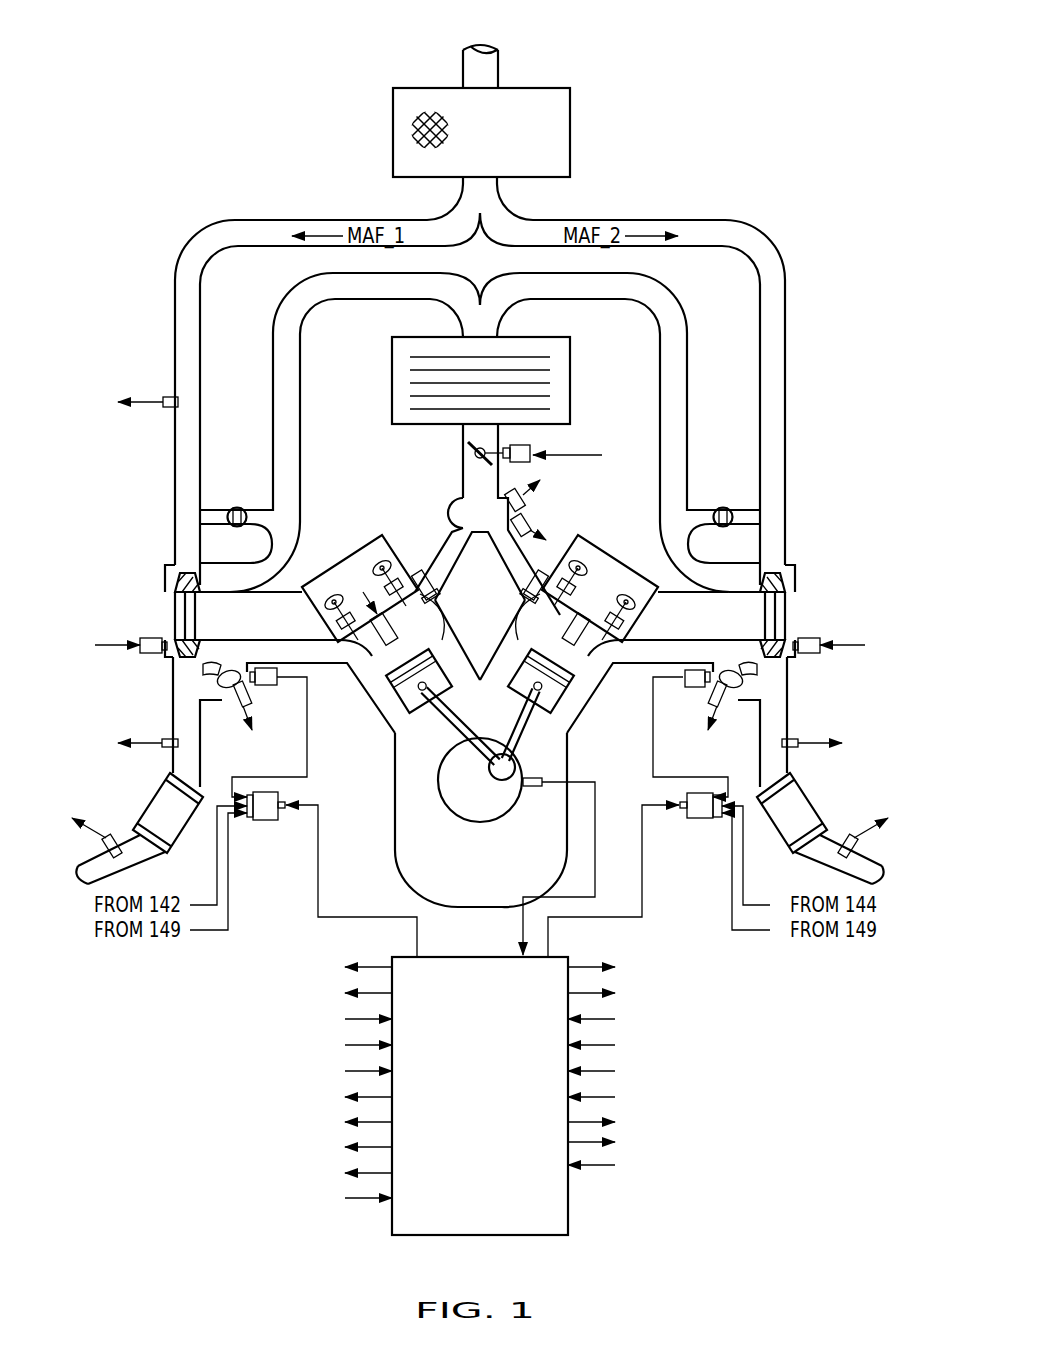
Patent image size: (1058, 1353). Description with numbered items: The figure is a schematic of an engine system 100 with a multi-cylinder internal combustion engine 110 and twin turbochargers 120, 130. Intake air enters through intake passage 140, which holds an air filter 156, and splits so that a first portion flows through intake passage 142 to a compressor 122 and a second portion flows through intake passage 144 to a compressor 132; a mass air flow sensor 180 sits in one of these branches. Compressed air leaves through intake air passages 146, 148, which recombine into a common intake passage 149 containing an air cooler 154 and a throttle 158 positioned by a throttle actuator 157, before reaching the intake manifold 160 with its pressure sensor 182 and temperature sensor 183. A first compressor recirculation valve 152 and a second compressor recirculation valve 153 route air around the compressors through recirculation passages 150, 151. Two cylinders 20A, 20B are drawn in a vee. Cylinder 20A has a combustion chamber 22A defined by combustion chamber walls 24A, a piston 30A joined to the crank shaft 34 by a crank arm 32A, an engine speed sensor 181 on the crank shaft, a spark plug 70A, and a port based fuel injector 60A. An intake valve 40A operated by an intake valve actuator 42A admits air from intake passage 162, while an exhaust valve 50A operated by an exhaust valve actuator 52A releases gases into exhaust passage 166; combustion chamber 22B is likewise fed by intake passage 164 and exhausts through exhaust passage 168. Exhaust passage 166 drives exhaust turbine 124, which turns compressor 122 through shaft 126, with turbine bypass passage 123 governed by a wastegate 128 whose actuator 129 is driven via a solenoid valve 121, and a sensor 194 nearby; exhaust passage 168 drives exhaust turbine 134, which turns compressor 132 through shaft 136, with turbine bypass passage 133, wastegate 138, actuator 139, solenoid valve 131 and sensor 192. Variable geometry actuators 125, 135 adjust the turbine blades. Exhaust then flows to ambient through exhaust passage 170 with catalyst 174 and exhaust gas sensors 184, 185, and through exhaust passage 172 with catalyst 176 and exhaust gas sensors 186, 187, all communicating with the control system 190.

The engine system 100 is at (767, 27).
The internal combustion engine 110 is at (405, 870).
The turbocharger 120 is at (108, 606).
The solenoid valve 121 is at (267, 822).
The compressor 122 is at (178, 582).
The turbine bypass passage 123 is at (207, 688).
The exhaust turbine 124 is at (168, 651).
The actuator 125 is at (150, 637).
The shaft 126 is at (189, 622).
The wastegate 128 is at (245, 690).
The actuator 129 is at (270, 686).
The turbocharger 130 is at (852, 606).
The solenoid valve 131 is at (705, 822).
The compressor 132 is at (790, 582).
The turbine bypass passage 133 is at (742, 688).
The exhaust turbine 134 is at (792, 651).
The actuator 135 is at (810, 637).
The shaft 136 is at (771, 622).
The wastegate 138 is at (712, 690).
The actuator 139 is at (686, 687).
The intake passage 140 is at (487, 72).
The intake passage 142 is at (262, 230).
The intake passage 144 is at (698, 230).
The intake air passage 146 is at (288, 388).
The intake air passage 148 is at (680, 388).
The common intake passage 149 is at (468, 478).
The recirculation passage 150 is at (250, 526).
The recirculation passage 151 is at (727, 526).
The first compressor recirculation valve 152 is at (239, 505).
The second compressor recirculation valve 153 is at (717, 505).
The air cooler 154 is at (565, 391).
The air filter 156 is at (555, 137).
The throttle actuator 157 is at (530, 452).
The throttle 158 is at (468, 448).
The intake manifold 160 is at (448, 510).
The intake passage 162 is at (443, 567).
The intake passage 164 is at (513, 553).
The exhaust passage 166 is at (293, 643).
The exhaust passage 168 is at (668, 643).
The exhaust passage 170 is at (198, 766).
The exhaust passage 172 is at (768, 765).
The catalyst 174 is at (163, 806).
The catalyst 176 is at (798, 806).
The mass air flow sensor 180 is at (172, 395).
The engine speed sensor 181 is at (532, 788).
The intake manifold pressure sensor 182 is at (528, 508).
The intake manifold temperature sensor 183 is at (535, 530).
The exhaust gas sensor 184 is at (170, 738).
The exhaust gas sensor 185 is at (105, 845).
The exhaust gas sensor 186 is at (790, 738).
The exhaust gas sensor 187 is at (857, 847).
The control system 190 is at (466, 1109).
The sensor 192 is at (698, 734).
The sensor 194 is at (250, 729).
The cylinder 20A is at (412, 742).
The cylinder 20B is at (563, 714).
The combustion chamber 22A is at (397, 700).
The combustion chamber 22B is at (578, 680).
The combustion chamber walls 24A is at (395, 720).
The piston 30A is at (400, 740).
The crank arm 32A is at (452, 727).
The crank shaft 34 is at (478, 795).
The intake valve 40A is at (418, 568).
The intake valve actuator 42A is at (376, 545).
The exhaust valve 50A is at (395, 673).
The exhaust valve actuator 52A is at (332, 597).
The fuel injector 60A is at (442, 585).
The spark plug 70A is at (335, 598).